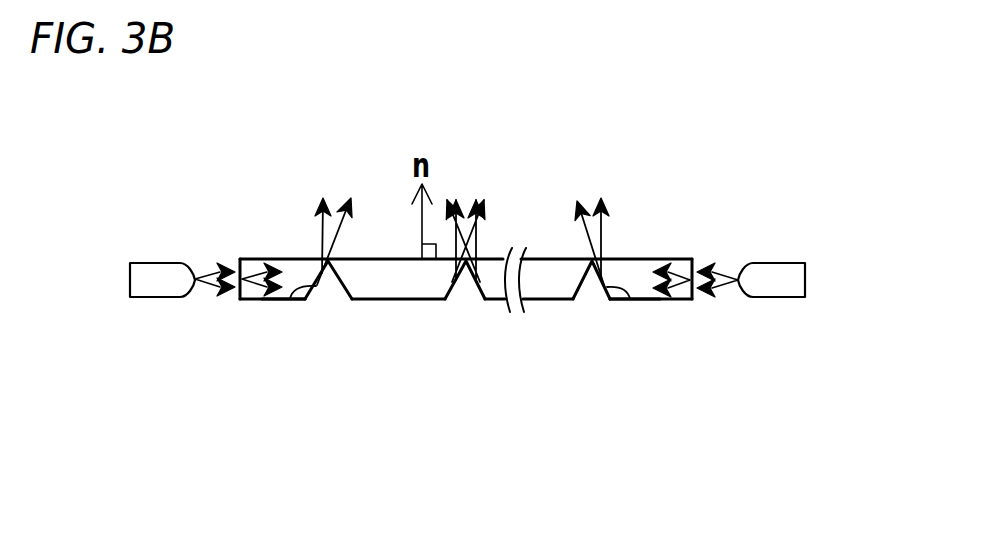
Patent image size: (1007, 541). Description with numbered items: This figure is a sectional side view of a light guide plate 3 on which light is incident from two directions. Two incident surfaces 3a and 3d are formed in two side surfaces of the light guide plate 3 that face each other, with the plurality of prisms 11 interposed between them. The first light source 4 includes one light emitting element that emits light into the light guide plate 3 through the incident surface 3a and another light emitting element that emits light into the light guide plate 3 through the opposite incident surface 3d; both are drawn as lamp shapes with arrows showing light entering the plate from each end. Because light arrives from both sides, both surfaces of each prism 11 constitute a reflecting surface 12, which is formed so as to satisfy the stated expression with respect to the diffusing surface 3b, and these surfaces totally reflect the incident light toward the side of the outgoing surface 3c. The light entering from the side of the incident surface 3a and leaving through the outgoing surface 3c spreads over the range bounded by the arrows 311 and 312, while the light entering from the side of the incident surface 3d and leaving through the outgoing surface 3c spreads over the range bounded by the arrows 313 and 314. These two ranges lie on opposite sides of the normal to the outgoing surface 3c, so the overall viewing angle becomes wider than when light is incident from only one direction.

The light guide plate 3 is at (479, 314).
The incident surface 3a is at (239, 259).
The diffusing surface 3b is at (262, 300).
The outgoing surface 3c is at (642, 259).
The incident surface 3d is at (697, 260).
The first light source 4 is at (143, 263).
The prism 11 is at (330, 300).
The reflecting surface 12 is at (297, 300).
The arrow 311 is at (326, 228).
The arrow 312 is at (346, 228).
The arrow 313 is at (604, 228).
The arrow 314 is at (584, 228).